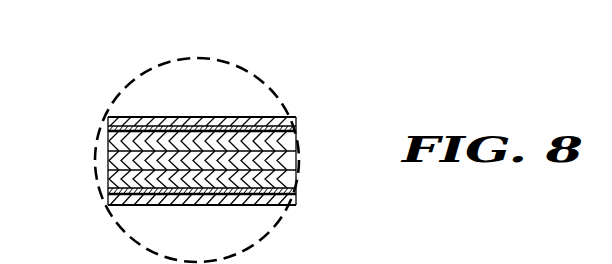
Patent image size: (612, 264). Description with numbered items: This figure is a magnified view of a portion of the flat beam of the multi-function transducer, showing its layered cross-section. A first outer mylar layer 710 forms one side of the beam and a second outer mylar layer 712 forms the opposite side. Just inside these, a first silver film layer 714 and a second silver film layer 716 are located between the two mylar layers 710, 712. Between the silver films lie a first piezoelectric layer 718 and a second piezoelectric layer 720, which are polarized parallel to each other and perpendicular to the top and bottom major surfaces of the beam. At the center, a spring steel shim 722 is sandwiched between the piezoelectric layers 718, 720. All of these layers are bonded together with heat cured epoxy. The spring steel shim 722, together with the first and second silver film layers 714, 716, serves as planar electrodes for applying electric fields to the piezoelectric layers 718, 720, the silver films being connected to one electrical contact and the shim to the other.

The first outer mylar layer 710 is at (294, 118).
The second outer mylar layer 712 is at (296, 200).
The first silver film layer 714 is at (106, 130).
The second silver film layer 716 is at (105, 197).
The first piezoelectric layer 718 is at (298, 132).
The second piezoelectric layer 720 is at (298, 178).
The spring steel shim 722 is at (104, 162).